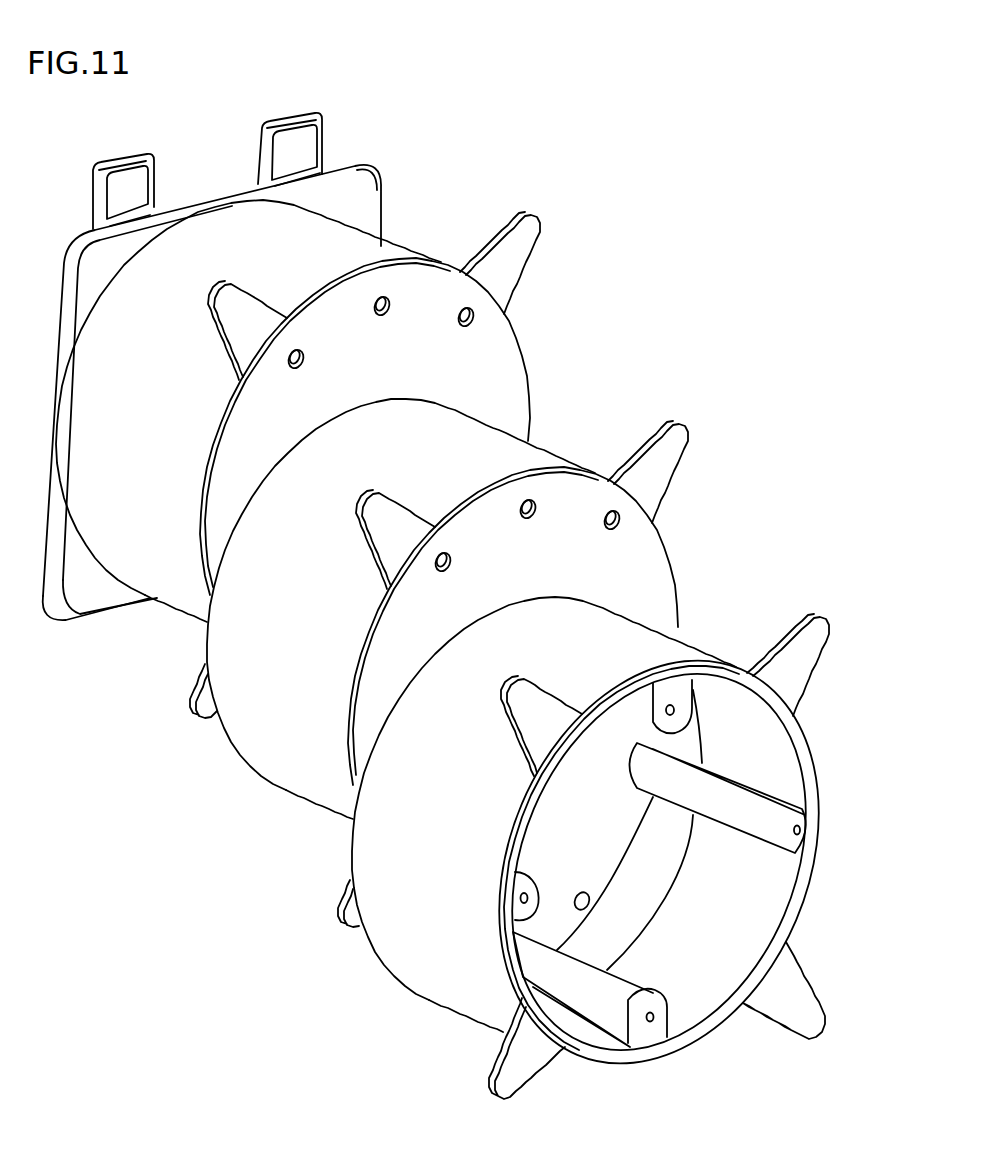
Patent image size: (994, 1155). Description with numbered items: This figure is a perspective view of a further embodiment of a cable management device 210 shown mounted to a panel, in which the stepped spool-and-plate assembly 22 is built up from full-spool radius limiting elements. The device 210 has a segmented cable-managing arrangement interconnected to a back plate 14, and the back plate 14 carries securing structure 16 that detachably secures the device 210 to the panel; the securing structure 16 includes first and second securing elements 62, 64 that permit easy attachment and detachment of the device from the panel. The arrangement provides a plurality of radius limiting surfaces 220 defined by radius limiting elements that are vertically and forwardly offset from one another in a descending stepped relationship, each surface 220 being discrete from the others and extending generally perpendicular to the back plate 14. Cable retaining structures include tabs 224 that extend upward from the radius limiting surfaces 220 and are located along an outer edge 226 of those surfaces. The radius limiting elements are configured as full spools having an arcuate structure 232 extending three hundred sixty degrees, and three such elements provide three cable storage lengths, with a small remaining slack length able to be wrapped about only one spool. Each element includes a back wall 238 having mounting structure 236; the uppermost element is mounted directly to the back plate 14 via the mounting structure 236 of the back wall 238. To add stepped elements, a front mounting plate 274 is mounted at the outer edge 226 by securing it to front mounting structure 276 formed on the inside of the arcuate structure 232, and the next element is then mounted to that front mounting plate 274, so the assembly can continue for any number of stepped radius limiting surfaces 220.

The back plate 14 is at (360, 205).
The securing structure 16 is at (160, 130).
The first securing element 62 is at (118, 162).
The second securing element 64 is at (307, 120).
The cable management device 210 is at (695, 165).
The spacer plate 22 is at (572, 202).
The radius limiting surface 220 is at (232, 217).
The tab 224 is at (532, 228).
The outer edge 226 is at (817, 782).
The arcuate structure 232 is at (142, 550).
The mounting structure 236 is at (592, 902).
The back wall 238 is at (610, 830).
The front mounting plate 274 is at (497, 390).
The front mounting structure 276 is at (673, 708).